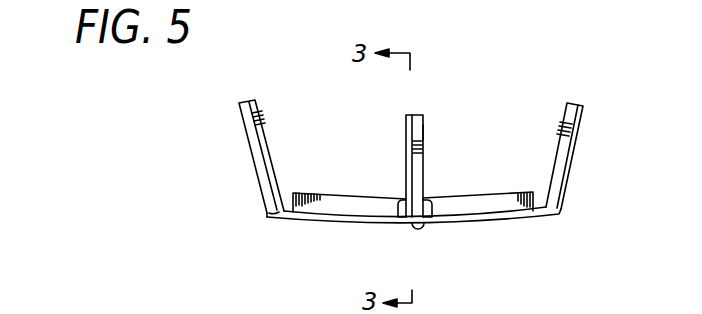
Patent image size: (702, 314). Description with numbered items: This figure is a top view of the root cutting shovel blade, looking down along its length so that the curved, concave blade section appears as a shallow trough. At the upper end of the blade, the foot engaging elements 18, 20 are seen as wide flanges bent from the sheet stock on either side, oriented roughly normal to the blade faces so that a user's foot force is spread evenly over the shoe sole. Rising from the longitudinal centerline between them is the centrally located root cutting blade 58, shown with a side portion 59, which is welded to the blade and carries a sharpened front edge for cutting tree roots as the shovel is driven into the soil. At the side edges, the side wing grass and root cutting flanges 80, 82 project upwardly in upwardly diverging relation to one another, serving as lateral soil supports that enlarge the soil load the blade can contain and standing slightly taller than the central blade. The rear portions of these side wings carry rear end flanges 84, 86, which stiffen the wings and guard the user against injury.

The foot engaging element 18 is at (345, 205).
The foot engaging element 20 is at (492, 202).
The centrally located root cutting blade 58 is at (412, 148).
The post side wall 59 is at (425, 133).
The side wing grass and root cutting flange 80 is at (257, 157).
The side wing grass and root cutting flange 82 is at (575, 158).
The rear end flange 84 is at (262, 140).
The rear end flange 86 is at (568, 122).